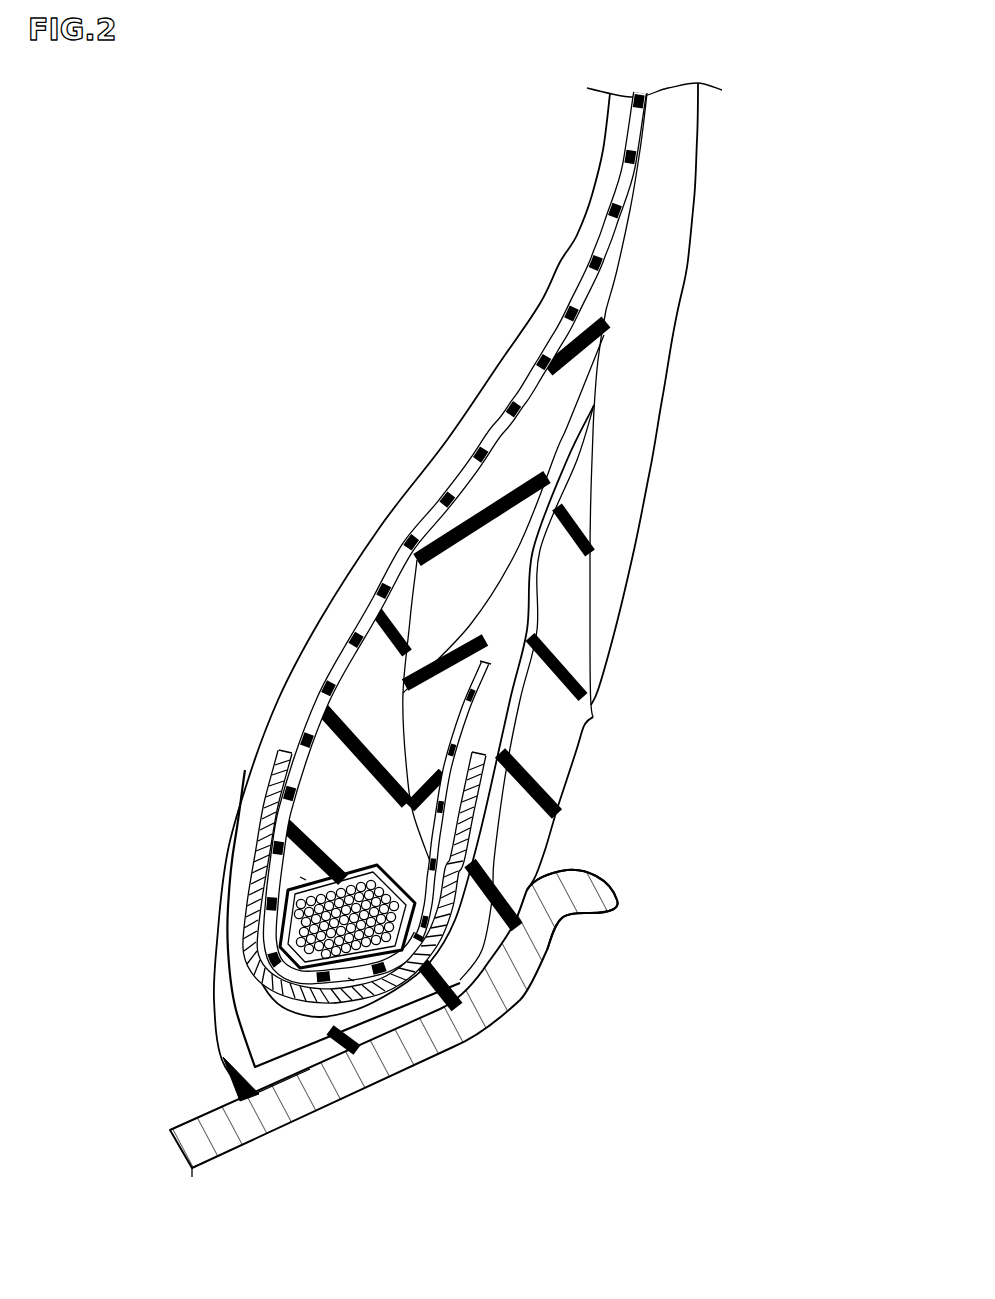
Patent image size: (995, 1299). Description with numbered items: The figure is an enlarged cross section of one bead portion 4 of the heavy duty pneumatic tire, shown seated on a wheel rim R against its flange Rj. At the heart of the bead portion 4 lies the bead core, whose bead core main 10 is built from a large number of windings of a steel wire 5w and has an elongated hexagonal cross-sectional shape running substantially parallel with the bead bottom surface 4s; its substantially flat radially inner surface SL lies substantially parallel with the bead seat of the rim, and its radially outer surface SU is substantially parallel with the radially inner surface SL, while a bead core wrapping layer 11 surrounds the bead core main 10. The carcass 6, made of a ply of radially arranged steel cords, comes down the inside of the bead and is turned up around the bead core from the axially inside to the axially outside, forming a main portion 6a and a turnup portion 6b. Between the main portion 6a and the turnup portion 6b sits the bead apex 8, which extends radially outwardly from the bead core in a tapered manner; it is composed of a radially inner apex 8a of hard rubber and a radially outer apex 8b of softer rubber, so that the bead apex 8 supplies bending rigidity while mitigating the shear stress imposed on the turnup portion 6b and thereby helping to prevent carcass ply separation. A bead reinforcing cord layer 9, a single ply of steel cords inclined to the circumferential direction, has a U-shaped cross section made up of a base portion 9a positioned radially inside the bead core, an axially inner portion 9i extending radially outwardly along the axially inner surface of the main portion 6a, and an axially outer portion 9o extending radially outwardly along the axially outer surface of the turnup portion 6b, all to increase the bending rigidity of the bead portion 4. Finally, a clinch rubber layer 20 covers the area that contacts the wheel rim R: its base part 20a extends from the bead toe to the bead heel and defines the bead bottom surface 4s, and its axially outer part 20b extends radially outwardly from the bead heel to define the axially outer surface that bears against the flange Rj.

The bead portion 4 is at (713, 729).
The bead bottom surface 4s is at (258, 1080).
The steel wire 5w is at (297, 918).
The carcass 6 is at (367, 535).
The main portion 6a is at (363, 652).
The turnup portion 6b is at (463, 717).
The bead apex 8 is at (394, 711).
The radially inner apex 8a is at (393, 617).
The radially outer apex 8b is at (507, 482).
The bead reinforcing cord layer 9 is at (390, 906).
The axially inner portion 9i is at (277, 795).
The axially outer portion 9o is at (467, 807).
The base portion 9a is at (335, 1008).
The bead core main 10 is at (254, 993).
The bead core wrapping layer 11 is at (375, 955).
The clinch rubber layer 20 is at (492, 649).
The base part 20a is at (313, 1053).
The axially outer part 20b is at (568, 598).
The wheel rim R is at (374, 1023).
The flange Rj is at (533, 955).
The radially outer surface SU is at (303, 880).
The radially inner surface SL is at (350, 980).